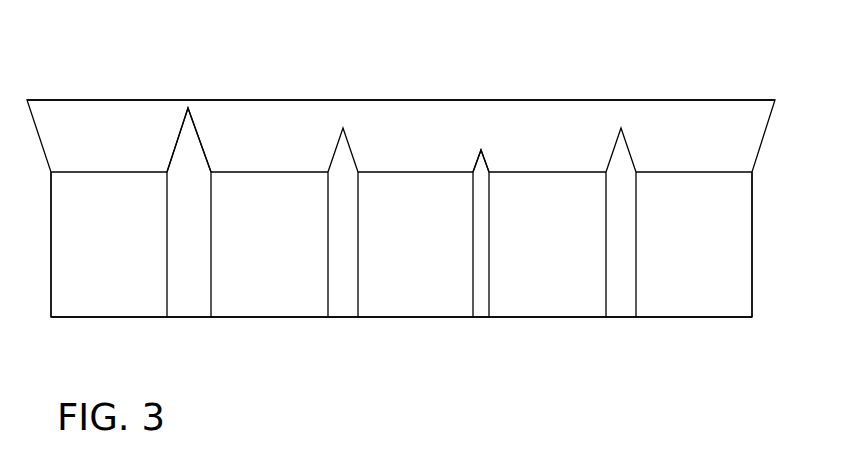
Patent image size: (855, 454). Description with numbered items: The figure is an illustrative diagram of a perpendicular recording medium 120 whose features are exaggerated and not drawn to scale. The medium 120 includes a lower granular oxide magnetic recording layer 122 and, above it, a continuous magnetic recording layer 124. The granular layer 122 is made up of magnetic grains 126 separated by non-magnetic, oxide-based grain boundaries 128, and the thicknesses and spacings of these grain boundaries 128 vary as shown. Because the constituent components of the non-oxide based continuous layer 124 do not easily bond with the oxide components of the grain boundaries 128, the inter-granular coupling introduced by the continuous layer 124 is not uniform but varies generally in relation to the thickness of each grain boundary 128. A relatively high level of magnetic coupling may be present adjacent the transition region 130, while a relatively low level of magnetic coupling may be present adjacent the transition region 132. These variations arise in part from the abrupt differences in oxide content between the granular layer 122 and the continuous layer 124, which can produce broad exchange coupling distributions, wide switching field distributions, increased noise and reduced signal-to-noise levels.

The perpendicular recording medium 120 is at (131, 44).
The granular oxide magnetic recording layer 122 is at (710, 310).
The continuous magnetic recording layer 124 is at (670, 98).
The magnetic grains 126 is at (92, 303).
The grain boundaries 128 is at (193, 303).
The transition region 130 is at (486, 157).
The transition region 132 is at (200, 143).